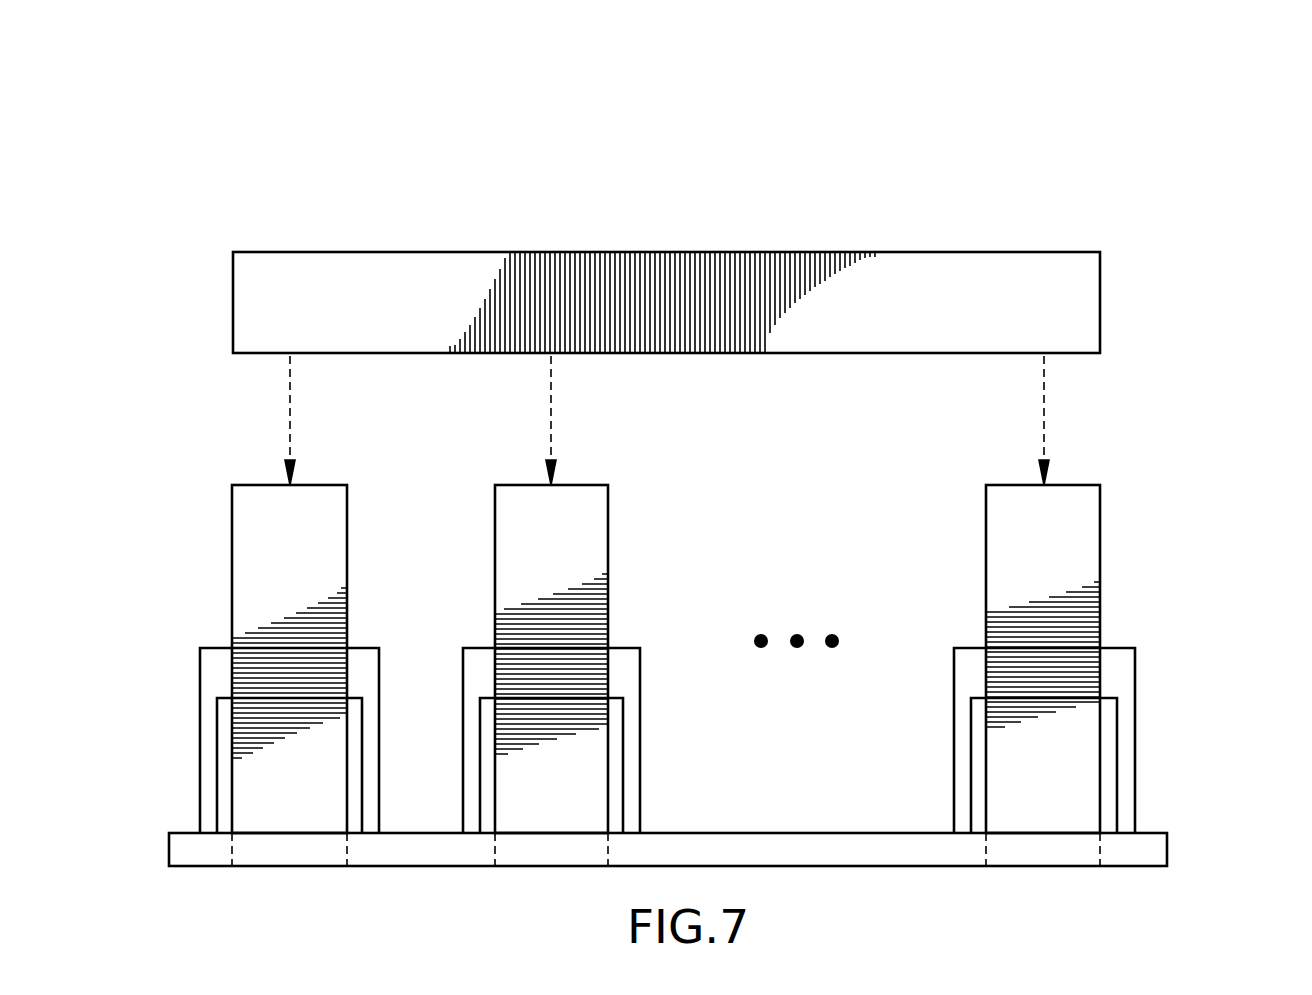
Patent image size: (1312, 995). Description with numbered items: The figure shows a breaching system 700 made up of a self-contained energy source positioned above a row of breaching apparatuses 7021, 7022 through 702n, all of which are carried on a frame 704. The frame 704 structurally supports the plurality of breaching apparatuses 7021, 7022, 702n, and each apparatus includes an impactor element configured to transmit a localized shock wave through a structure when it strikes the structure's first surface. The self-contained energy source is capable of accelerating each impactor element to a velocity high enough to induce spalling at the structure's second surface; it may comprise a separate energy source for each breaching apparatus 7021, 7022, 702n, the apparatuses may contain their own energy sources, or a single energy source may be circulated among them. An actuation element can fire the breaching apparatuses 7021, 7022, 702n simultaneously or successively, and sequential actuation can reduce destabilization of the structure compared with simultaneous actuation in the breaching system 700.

The breaching system 700 is at (733, 465).
The breaching apparatus 7021 is at (322, 485).
The breaching apparatus 7022 is at (585, 485).
The breaching apparatus 702n is at (1076, 485).
The frame 704 is at (770, 833).